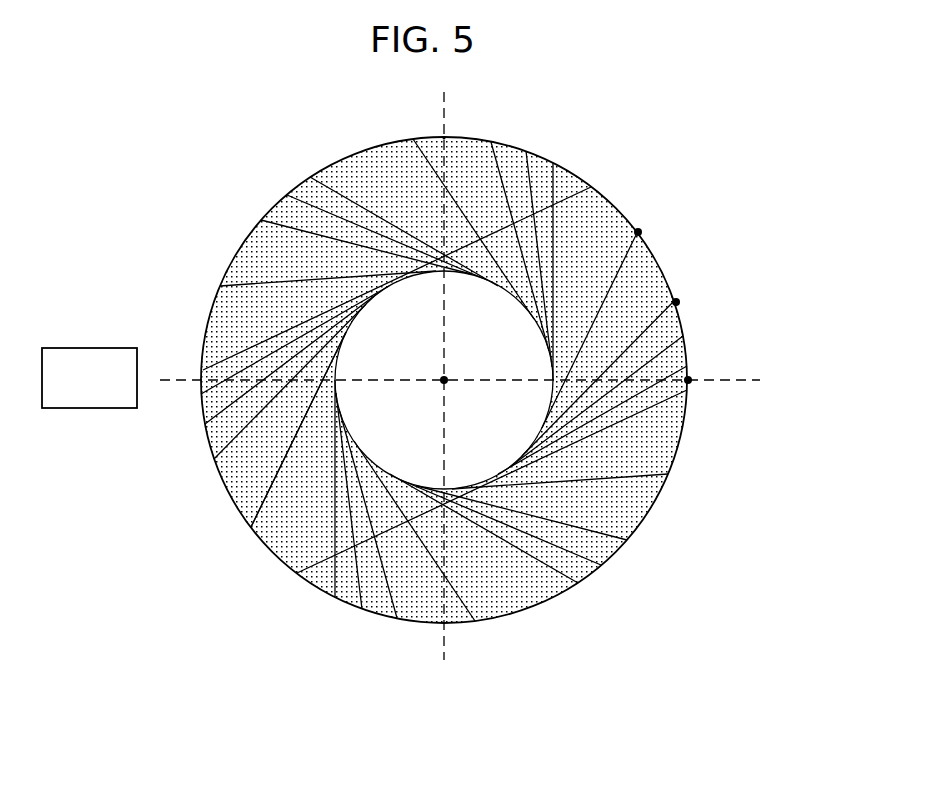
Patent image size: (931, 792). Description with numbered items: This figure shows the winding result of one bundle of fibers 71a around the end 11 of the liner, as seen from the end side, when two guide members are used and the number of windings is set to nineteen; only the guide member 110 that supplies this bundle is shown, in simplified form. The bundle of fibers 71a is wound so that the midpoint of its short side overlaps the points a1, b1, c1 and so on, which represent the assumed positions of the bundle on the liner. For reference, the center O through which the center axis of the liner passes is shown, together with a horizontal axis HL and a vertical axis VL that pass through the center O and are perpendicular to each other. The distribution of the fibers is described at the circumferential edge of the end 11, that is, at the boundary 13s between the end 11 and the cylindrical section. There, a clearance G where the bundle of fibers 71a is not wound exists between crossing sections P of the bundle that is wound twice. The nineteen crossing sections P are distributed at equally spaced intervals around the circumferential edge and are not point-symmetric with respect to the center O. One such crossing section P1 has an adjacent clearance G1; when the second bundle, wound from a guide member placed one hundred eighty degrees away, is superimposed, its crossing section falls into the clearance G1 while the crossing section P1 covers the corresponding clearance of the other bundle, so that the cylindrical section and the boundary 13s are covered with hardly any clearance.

The end 11 is at (605, 220).
The boundary 13s is at (678, 300).
The clearance G is at (392, 150).
The clearance G1 is at (465, 145).
The crossing section P is at (240, 272).
The crossing section P1 is at (444, 134).
The point c1 is at (654, 228).
The point b1 is at (693, 298).
The point a1 is at (705, 382).
The center O is at (454, 367).
The horizontal axis HL is at (478, 382).
The vertical axis VL is at (440, 391).
The bundle of fibers 71a is at (253, 462).
The guide member 110 is at (103, 347).